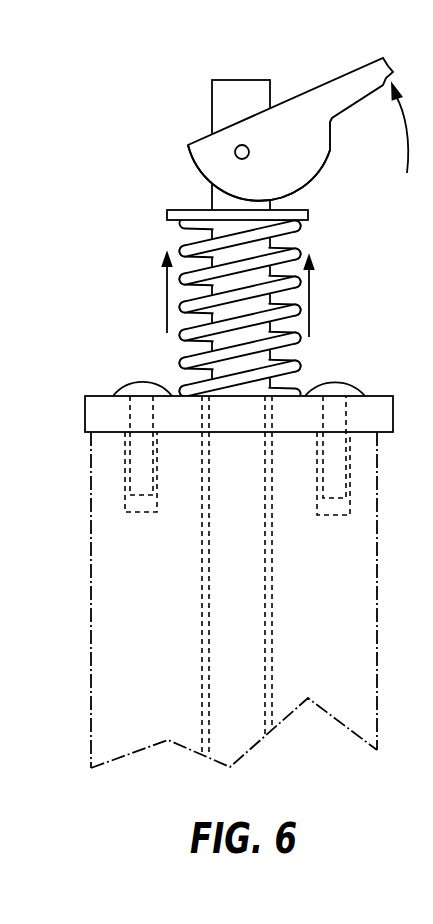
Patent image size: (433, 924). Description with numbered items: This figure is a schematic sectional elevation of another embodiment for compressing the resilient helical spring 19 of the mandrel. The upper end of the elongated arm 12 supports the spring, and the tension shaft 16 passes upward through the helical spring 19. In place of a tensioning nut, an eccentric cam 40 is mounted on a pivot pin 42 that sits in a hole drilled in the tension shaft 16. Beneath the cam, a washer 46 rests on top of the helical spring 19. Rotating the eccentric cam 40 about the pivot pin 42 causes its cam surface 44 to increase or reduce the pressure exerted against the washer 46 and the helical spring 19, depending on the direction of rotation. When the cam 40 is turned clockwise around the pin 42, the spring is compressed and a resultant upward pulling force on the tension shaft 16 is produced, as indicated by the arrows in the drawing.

The elongated arm 12 is at (90, 600).
The tension shaft 16 is at (222, 92).
The resilient helical spring 19 is at (300, 367).
The eccentric cam 40 is at (360, 73).
The pivot pin 42 is at (242, 145).
The cam surface 44 is at (315, 177).
The washer 46 is at (190, 209).